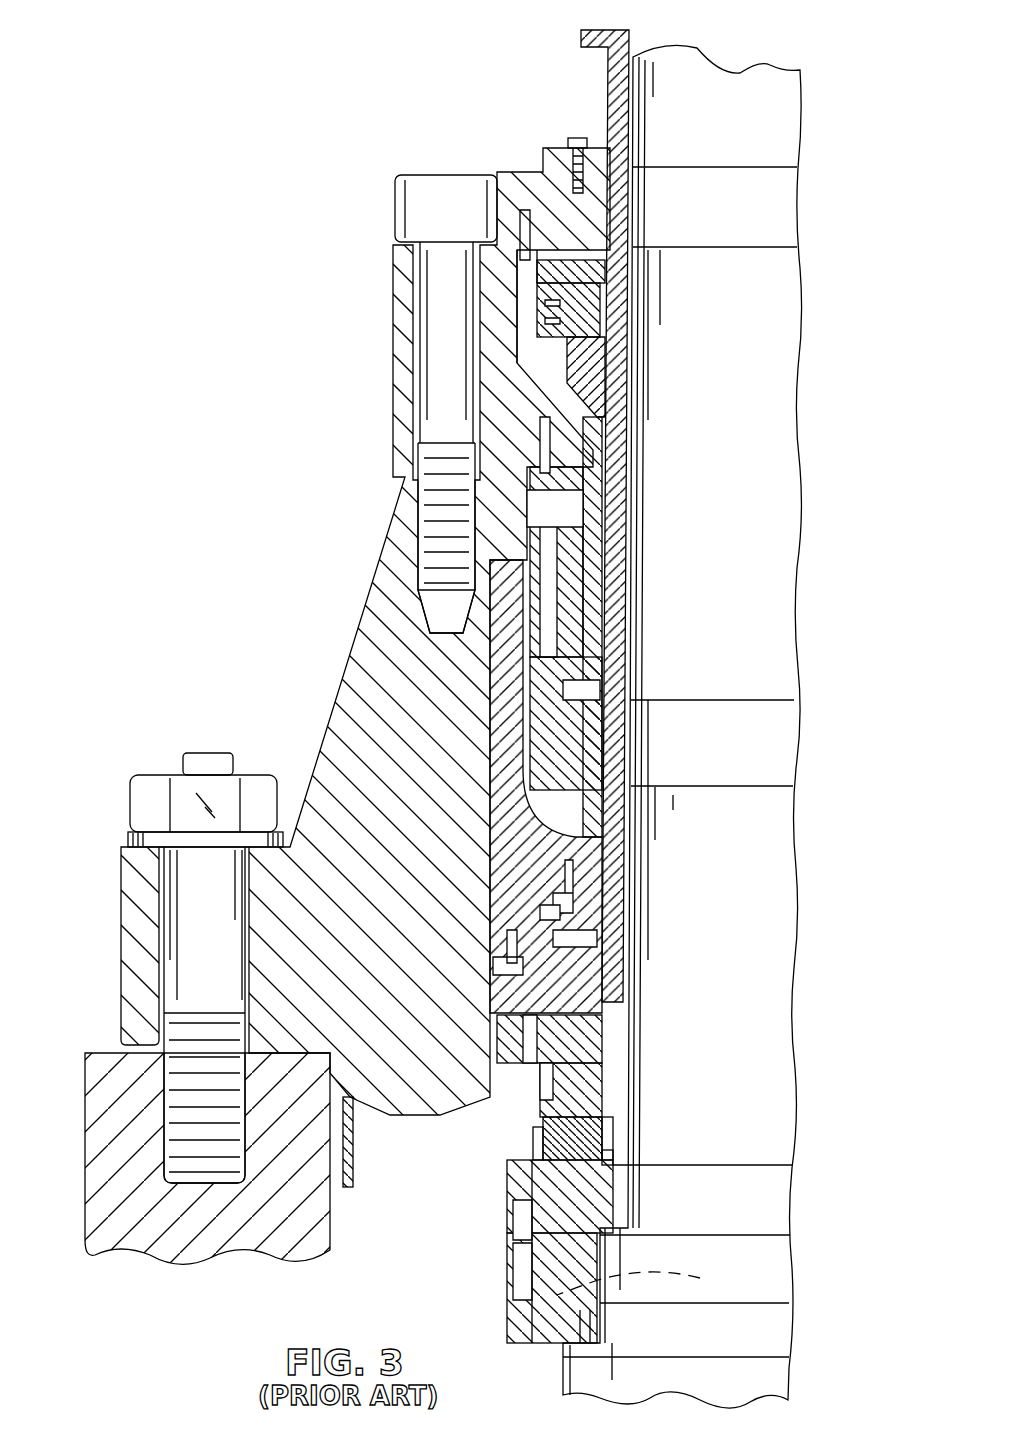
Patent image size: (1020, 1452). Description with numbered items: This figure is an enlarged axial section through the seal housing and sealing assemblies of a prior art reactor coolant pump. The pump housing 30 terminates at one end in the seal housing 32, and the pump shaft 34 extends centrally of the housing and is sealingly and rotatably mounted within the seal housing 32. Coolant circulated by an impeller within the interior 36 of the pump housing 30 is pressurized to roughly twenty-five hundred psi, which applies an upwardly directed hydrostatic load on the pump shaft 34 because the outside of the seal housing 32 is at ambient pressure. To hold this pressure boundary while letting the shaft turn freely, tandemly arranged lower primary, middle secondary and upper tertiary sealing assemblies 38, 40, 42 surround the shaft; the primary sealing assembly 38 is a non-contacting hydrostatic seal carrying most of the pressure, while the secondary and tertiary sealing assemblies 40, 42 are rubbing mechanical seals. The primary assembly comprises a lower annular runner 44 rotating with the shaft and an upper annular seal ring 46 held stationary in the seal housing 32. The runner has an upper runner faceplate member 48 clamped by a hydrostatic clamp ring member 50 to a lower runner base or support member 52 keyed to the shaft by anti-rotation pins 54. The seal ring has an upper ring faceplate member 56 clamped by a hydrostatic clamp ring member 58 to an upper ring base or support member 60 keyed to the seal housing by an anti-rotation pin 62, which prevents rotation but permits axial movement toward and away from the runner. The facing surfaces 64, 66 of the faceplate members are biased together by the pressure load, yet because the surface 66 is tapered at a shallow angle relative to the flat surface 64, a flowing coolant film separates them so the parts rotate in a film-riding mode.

The pump housing 30 is at (233, 1222).
The seal housing 32 is at (373, 658).
The pump shaft 34 is at (773, 136).
The interior 36 is at (410, 1245).
The lower primary sealing assembly 38 is at (645, 1050).
The middle secondary sealing assembly 40 is at (650, 673).
The upper tertiary sealing assembly 42 is at (675, 277).
The lower annular runner 44 is at (615, 1210).
The upper annular seal ring 46 is at (672, 1057).
The upper annular runner faceplate member 48 is at (620, 1150).
The hydrostatic clamp ring member 50 is at (532, 1138).
The lower annular runner base or support member 52 is at (540, 1272).
The anti-rotation pins 54 is at (650, 1280).
The upper annular ring faceplate member 56 is at (587, 1102).
The hydrostatic clamp ring member 58 is at (513, 1052).
The upper annular ring base or support member 60 is at (600, 1032).
The anti-rotation pin 62 is at (558, 940).
The surface 64 is at (547, 1103).
The surface 66 is at (613, 1147).